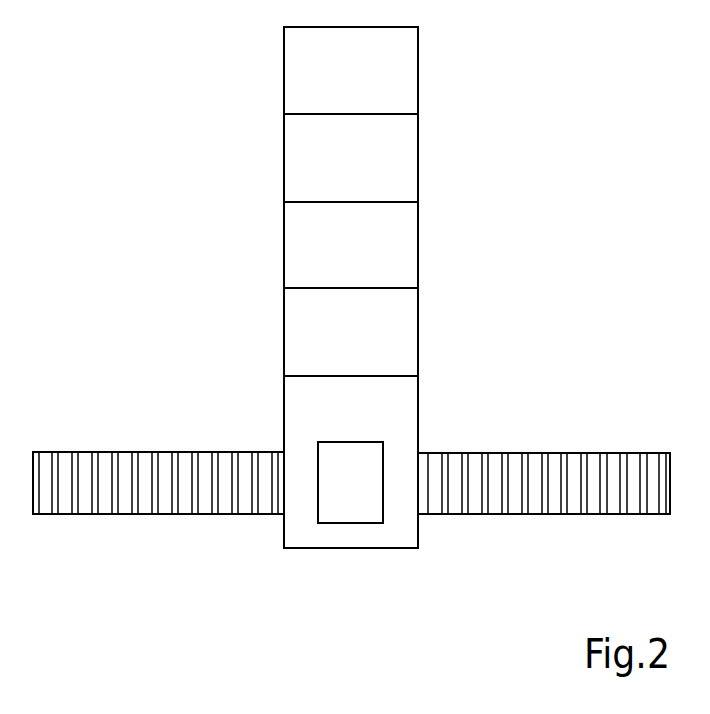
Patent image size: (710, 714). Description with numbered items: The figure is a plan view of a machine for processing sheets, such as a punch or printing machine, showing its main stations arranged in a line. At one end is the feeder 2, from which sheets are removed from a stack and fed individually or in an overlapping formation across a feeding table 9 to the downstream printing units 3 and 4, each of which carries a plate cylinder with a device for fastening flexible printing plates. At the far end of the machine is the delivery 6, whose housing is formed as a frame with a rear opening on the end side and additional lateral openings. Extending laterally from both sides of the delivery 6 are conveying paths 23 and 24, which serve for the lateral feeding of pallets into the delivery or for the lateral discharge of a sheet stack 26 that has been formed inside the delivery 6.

The feeder 2 is at (396, 72).
The feeding table 9 is at (396, 162).
The printing unit 3 is at (396, 247).
The printing unit 4 is at (396, 335).
The delivery 6 is at (396, 410).
The sheet stack 26 is at (356, 510).
The conveying path 23 is at (165, 507).
The conveying path 24 is at (558, 507).